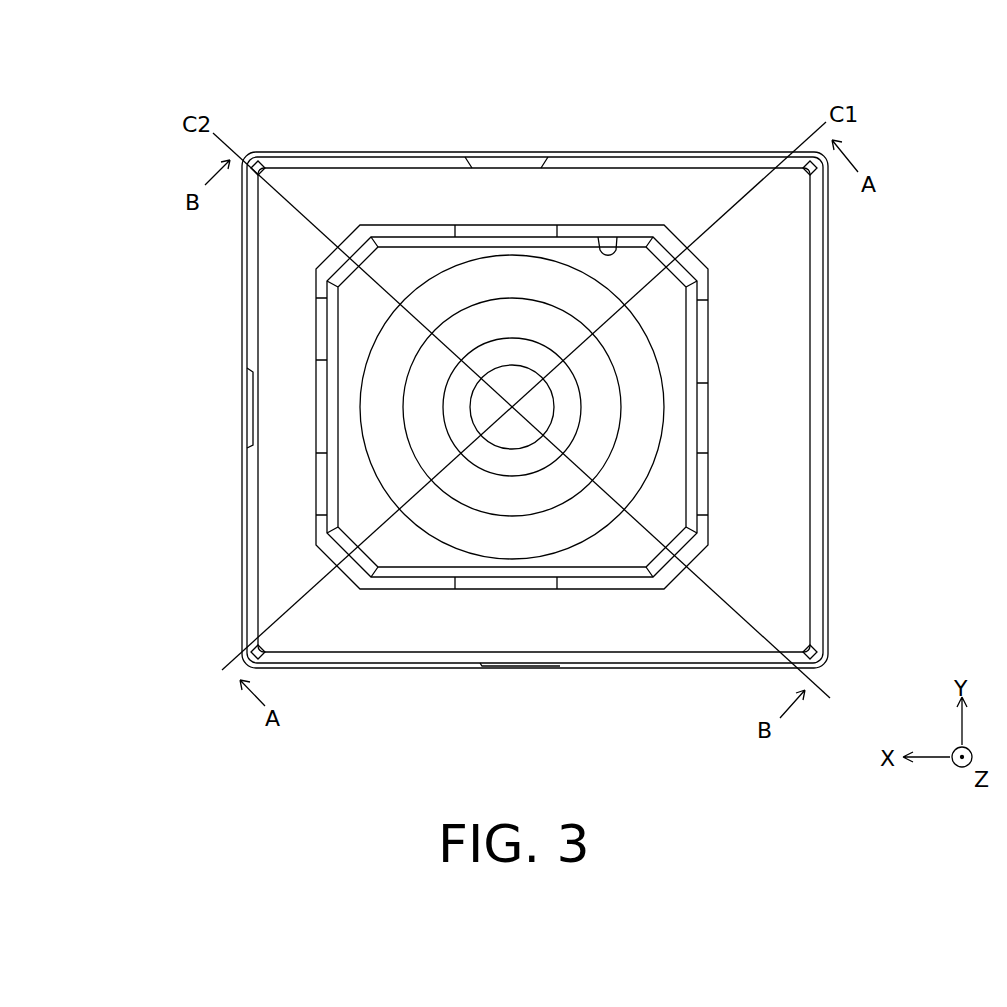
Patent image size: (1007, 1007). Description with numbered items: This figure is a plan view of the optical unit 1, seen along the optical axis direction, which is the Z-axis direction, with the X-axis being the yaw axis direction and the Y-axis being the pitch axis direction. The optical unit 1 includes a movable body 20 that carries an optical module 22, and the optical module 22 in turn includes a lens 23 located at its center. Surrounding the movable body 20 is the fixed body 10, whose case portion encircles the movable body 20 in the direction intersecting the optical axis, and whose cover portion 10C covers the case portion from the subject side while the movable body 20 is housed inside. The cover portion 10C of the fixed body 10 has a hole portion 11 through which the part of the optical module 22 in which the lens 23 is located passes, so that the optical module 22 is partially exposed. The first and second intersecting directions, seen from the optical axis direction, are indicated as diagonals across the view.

The optical unit 1 is at (902, 88).
The fixed body 10 is at (830, 356).
The cover portion 10C is at (770, 540).
The hole portion 11 is at (616, 255).
The movable body 20 is at (668, 462).
The optical module 22 is at (648, 340).
The lens 23 is at (515, 378).